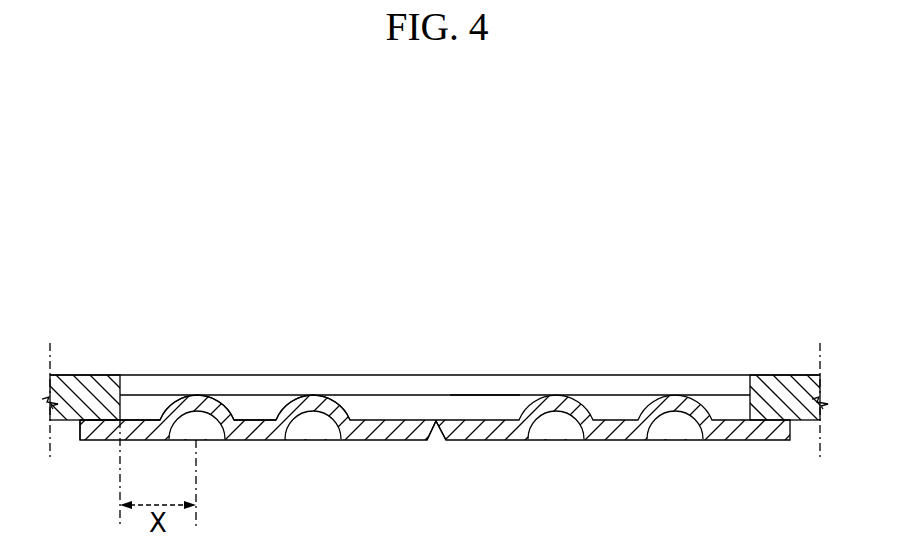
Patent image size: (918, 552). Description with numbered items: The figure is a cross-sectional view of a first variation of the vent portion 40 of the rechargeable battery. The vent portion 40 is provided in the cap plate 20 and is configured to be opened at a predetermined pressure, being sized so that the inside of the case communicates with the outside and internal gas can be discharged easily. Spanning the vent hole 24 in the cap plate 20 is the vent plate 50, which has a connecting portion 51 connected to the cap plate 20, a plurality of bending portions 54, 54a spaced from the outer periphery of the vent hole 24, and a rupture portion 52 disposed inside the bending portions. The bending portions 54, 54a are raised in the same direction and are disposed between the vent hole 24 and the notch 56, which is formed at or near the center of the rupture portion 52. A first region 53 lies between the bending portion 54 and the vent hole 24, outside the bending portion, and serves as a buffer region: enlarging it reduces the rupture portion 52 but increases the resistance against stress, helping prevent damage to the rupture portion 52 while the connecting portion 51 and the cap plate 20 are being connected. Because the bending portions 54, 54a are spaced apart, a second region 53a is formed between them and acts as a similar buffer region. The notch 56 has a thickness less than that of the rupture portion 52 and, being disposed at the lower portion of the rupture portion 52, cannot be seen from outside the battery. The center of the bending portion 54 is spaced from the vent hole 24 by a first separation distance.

The vent portion 40 is at (750, 317).
The cap plate 20 is at (83, 377).
The vent plate 50 is at (358, 393).
The vent hole 24 is at (480, 408).
The rupture portion 52 is at (407, 419).
The first region 53 is at (137, 419).
The bending portion 54 is at (196, 394).
The second region 53a is at (256, 419).
The bending portion 54a is at (310, 394).
The connecting portion 51 is at (105, 442).
The notch 56 is at (441, 442).